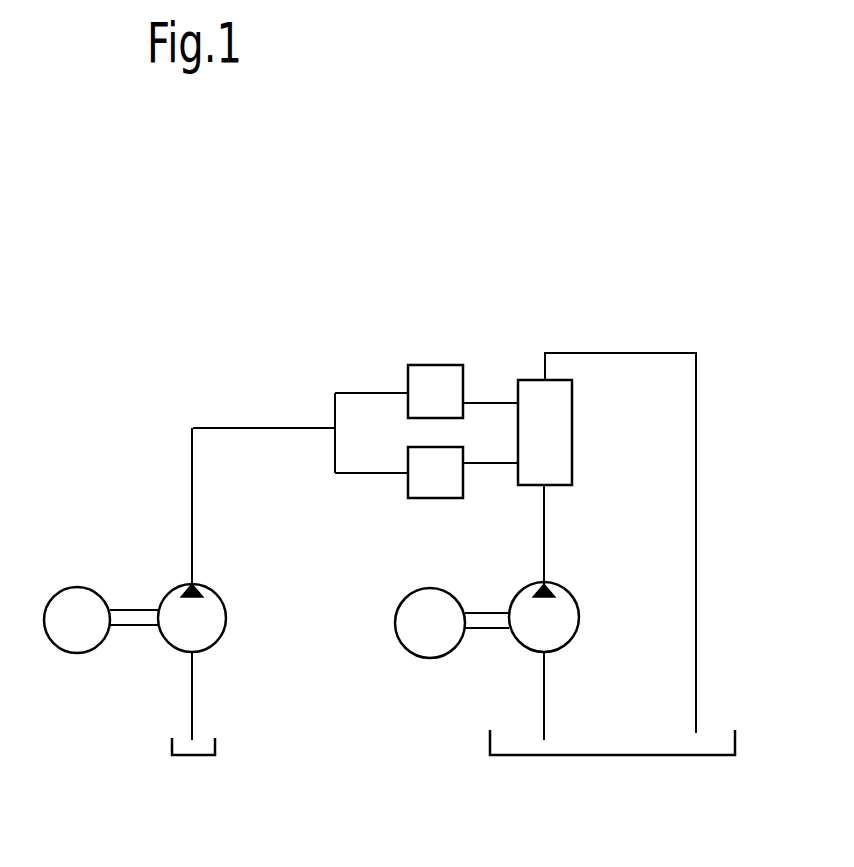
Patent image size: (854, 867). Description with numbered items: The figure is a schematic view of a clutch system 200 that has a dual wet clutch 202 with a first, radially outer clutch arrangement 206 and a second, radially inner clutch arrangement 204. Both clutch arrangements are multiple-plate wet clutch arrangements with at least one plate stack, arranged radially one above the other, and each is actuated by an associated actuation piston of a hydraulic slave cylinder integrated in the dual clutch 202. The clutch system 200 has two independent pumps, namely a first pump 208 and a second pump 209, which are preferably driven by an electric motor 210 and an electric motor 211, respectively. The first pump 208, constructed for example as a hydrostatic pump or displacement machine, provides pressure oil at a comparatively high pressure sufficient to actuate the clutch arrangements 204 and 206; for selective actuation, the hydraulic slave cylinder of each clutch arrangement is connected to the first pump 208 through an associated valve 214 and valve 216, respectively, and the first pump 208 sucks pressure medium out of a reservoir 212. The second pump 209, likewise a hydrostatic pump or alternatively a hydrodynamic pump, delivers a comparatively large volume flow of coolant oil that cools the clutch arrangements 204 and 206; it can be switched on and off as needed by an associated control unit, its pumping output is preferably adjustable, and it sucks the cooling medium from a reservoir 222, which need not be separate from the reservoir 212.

The clutch system 200 is at (326, 208).
The dual wet clutch 202 is at (562, 392).
The second clutch arrangement 204 is at (553, 460).
The first clutch arrangement 206 is at (557, 405).
The first pump 208 is at (225, 640).
The second pump 209 is at (575, 638).
The electric motor 210 is at (75, 588).
The electric motor 211 is at (413, 590).
The reservoir 212 is at (200, 745).
The valve 214 is at (428, 365).
The valve 216 is at (457, 442).
The reservoir 222 is at (520, 748).